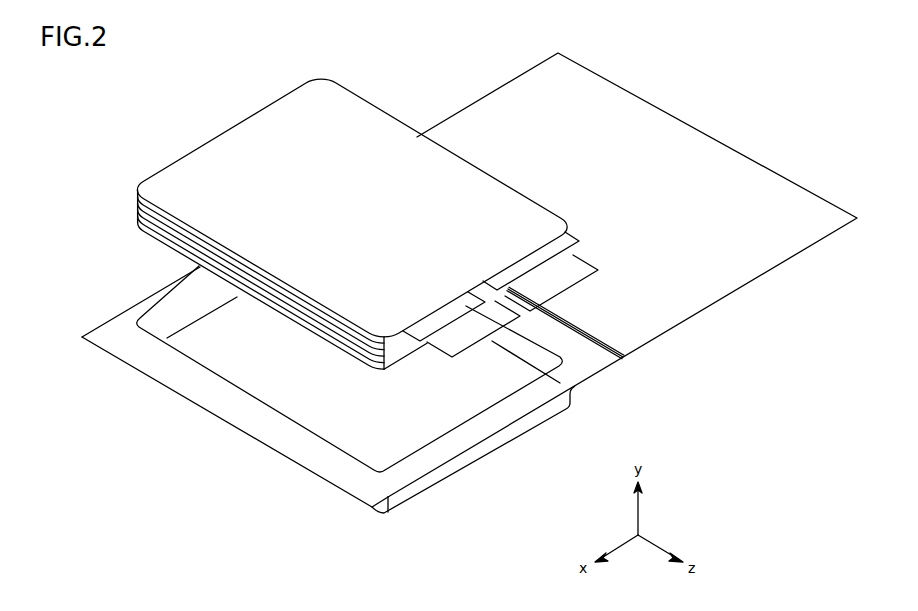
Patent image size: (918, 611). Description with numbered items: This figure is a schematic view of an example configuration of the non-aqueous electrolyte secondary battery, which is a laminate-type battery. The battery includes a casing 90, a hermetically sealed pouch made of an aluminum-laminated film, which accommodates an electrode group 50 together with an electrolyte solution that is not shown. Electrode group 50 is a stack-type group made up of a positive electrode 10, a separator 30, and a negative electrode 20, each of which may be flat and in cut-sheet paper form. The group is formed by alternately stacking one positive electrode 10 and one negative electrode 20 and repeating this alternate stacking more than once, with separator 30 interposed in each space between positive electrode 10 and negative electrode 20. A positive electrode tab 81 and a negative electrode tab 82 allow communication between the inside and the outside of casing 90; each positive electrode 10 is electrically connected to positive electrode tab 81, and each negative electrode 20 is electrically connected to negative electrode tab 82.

The positive electrode 10 is at (138, 214).
The negative electrode 20 is at (138, 197).
The separator 30 is at (138, 207).
The electrode group 50 is at (78, 167).
The positive electrode tab 81 is at (582, 272).
The negative electrode tab 82 is at (460, 355).
The casing 90 is at (712, 145).